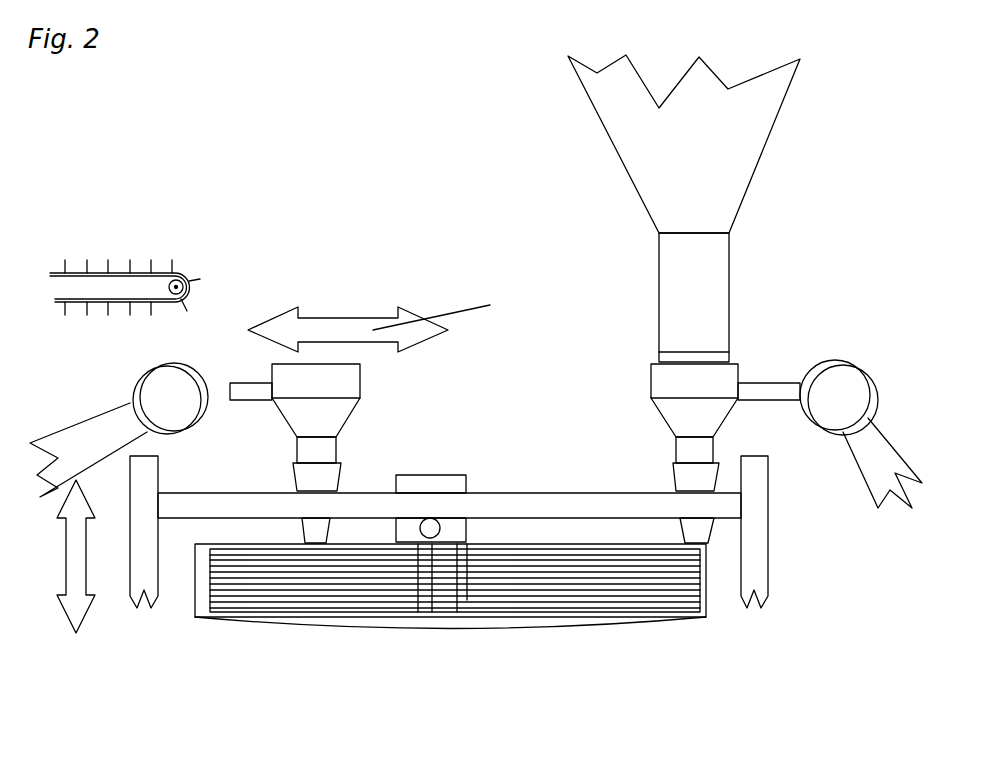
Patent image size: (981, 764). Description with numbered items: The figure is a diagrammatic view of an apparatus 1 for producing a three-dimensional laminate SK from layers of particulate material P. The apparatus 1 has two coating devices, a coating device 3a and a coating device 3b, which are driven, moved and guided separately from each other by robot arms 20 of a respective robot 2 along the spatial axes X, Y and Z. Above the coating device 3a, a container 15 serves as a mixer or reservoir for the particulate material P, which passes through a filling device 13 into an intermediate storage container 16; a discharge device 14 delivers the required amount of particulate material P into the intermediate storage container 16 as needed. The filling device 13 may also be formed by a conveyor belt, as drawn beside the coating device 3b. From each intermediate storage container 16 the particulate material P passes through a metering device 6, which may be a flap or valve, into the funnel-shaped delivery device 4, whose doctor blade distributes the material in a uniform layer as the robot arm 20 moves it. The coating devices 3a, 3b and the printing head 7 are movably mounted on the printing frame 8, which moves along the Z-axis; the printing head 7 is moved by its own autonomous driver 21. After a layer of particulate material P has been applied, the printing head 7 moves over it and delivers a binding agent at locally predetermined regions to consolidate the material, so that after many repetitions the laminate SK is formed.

The apparatus 1 is at (381, 145).
The robot 2 is at (78, 401).
The coating device 3a is at (616, 311).
The coating device 3b is at (282, 348).
The delivery device 4 is at (316, 474).
The metering device 6 is at (336, 455).
The printing head 7 is at (430, 487).
The printing frame 8 is at (232, 510).
The filling device 13 is at (130, 287).
The discharge device 14 is at (670, 355).
The container 15 is at (742, 135).
The intermediate storage container 16 is at (716, 371).
The robot arm 20 is at (230, 391).
The autonomous driver 21 is at (436, 524).
The particulate material P is at (516, 620).
The three-dimensional laminate SK is at (648, 592).